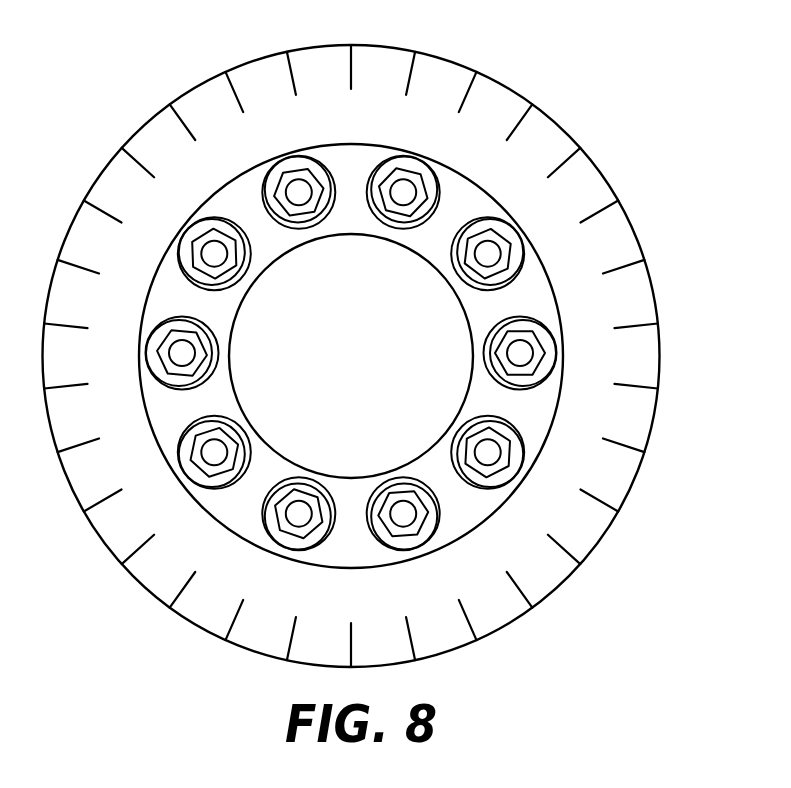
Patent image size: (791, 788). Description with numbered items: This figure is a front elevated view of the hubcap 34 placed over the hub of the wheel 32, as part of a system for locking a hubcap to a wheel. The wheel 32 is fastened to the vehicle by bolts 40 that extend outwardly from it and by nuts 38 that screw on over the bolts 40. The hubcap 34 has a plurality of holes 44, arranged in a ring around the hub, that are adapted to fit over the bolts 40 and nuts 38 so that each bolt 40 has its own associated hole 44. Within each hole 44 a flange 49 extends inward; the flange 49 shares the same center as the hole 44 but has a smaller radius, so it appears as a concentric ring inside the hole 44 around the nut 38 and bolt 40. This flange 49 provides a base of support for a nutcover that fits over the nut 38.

The wheel 32 is at (618, 295).
The hubcap 34 is at (465, 188).
The nut 38 is at (492, 233).
The bolt 40 is at (495, 255).
The flange 49 is at (517, 469).
The hole 44 is at (488, 478).